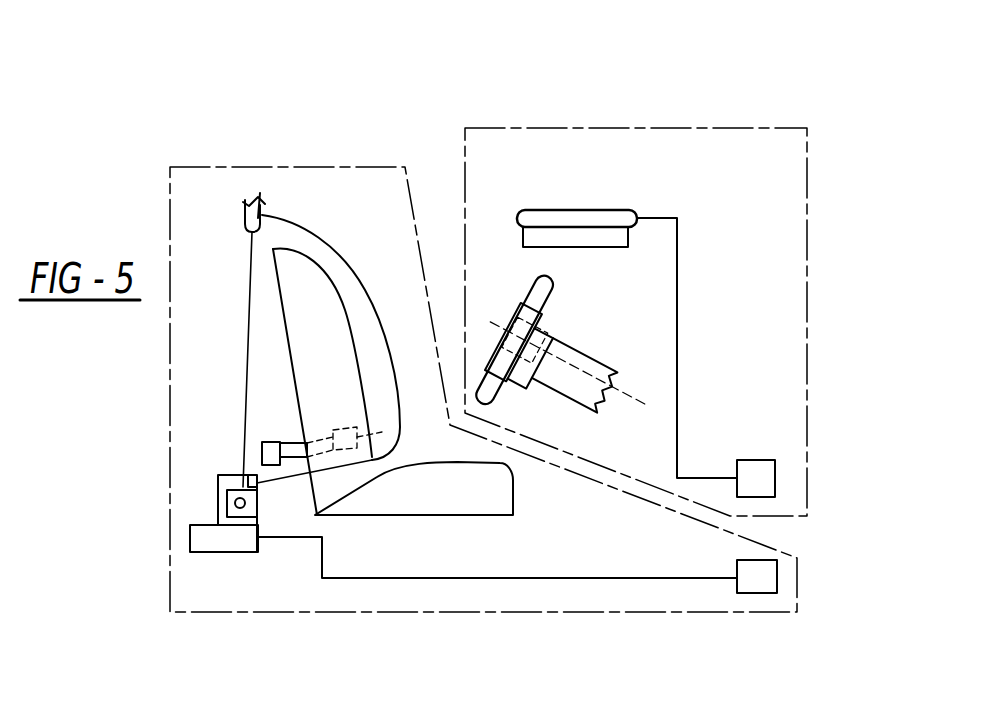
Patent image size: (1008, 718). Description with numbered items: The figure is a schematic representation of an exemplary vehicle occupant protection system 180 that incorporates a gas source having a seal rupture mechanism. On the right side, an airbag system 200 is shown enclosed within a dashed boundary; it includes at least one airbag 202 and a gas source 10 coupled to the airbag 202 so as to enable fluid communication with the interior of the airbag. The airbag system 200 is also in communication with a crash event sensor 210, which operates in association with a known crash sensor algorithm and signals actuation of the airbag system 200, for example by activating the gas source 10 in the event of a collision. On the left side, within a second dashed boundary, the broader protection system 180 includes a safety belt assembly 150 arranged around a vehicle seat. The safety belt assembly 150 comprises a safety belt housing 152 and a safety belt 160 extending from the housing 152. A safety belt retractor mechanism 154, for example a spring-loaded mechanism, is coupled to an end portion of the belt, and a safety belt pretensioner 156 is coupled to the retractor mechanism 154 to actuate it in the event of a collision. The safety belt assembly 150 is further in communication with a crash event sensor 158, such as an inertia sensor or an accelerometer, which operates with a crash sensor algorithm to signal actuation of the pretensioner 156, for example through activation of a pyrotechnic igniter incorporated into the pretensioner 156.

The gas source 10 is at (582, 220).
The safety belt assembly 150 is at (430, 612).
The safety belt housing 152 is at (228, 503).
The safety belt retractor mechanism 154 is at (245, 486).
The safety belt pretensioner 156 is at (225, 540).
The crash event sensor 158 is at (753, 595).
The safety belt 160 is at (298, 225).
The vehicle occupant protection system 180 is at (353, 50).
The airbag system 200 is at (807, 227).
The airbag 202 is at (593, 235).
The crash event sensor 210 is at (757, 475).